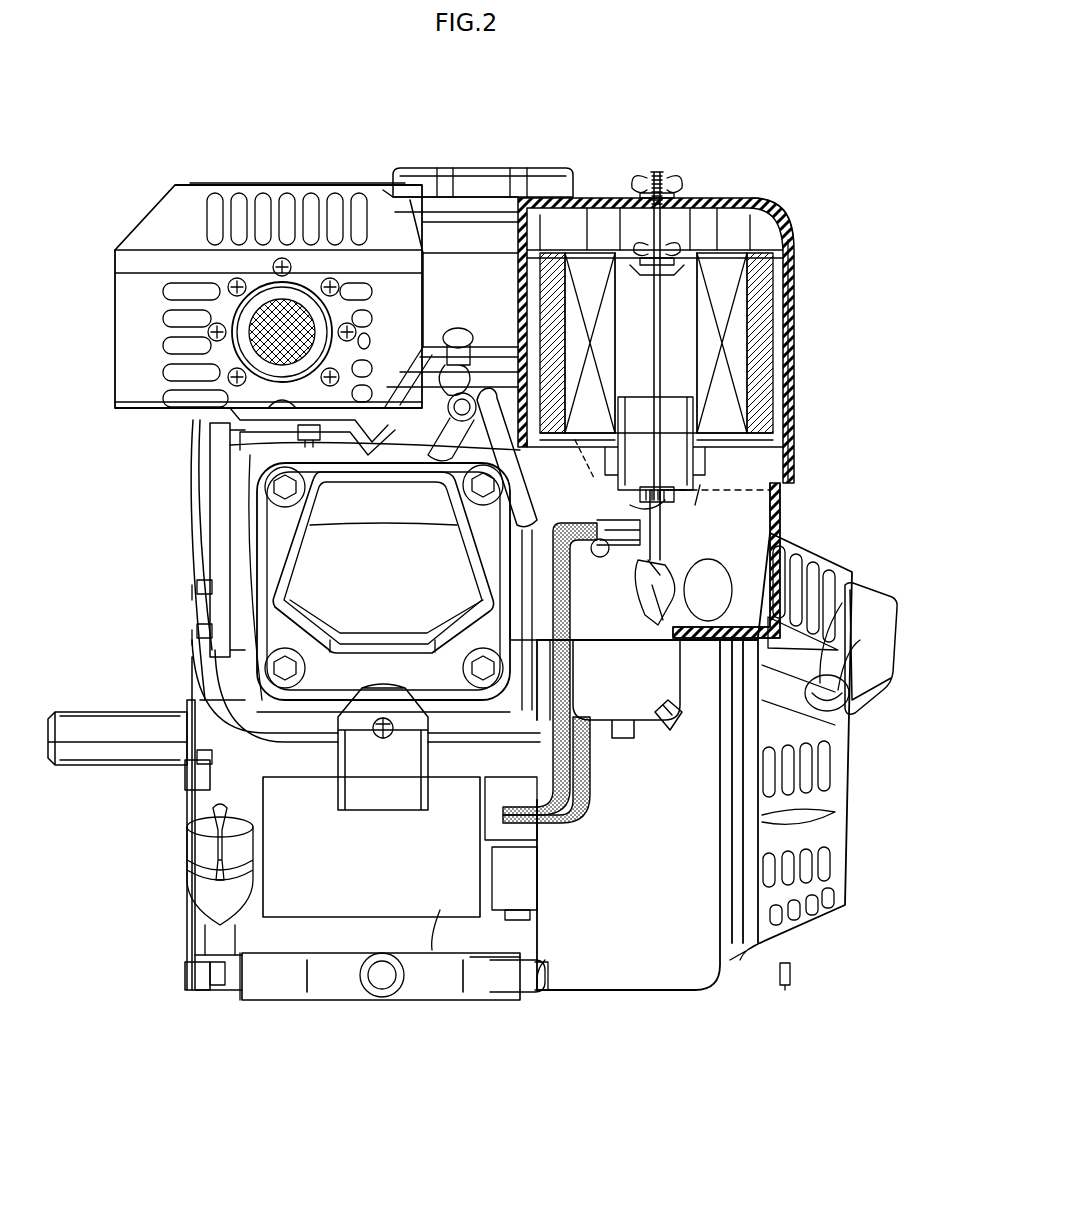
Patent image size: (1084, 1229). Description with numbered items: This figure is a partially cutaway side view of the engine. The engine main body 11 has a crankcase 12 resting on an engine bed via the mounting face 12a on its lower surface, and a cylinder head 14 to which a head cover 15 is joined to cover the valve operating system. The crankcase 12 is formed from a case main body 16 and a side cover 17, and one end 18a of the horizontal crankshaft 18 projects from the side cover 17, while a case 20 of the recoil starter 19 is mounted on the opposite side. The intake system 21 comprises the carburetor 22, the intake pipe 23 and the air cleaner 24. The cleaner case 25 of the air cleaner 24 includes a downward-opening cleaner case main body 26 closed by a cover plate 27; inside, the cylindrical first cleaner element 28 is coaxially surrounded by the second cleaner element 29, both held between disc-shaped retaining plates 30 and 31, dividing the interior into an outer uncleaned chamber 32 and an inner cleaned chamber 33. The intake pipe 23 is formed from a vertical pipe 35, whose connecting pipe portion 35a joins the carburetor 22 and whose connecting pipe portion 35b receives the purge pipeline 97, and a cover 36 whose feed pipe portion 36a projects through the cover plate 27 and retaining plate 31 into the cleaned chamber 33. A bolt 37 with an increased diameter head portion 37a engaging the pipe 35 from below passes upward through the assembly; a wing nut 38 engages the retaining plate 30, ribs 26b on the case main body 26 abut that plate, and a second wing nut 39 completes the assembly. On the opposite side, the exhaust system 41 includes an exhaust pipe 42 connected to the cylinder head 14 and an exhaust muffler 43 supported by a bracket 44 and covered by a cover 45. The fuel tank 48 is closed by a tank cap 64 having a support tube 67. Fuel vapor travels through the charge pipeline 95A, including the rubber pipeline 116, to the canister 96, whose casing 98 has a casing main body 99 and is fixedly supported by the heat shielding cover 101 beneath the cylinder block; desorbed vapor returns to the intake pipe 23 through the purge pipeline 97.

The engine main body 11 is at (185, 965).
The crankcase 12 is at (371, 1034).
The mounting face 12a is at (483, 1005).
The cylinder head 14 is at (520, 535).
The head cover 15 is at (300, 575).
The case main body 16 is at (360, 960).
The side cover 17 is at (280, 962).
The crankshaft 18 is at (117, 746).
The one end of crankshaft 18a is at (135, 712).
The recoil starter 19 is at (688, 992).
The case 20 is at (597, 990).
The intake system 21 is at (650, 745).
The carburetor 22 is at (607, 684).
The intake pipe 23 is at (713, 517).
The air cleaner 24 is at (678, 360).
The cleaner case 25 is at (684, 343).
The cleaner case main body 26 is at (785, 300).
The ribs 26b is at (600, 228).
The cover plate 27 is at (860, 283).
The first cleaner element 28 is at (540, 320).
The second cleaner element 29 is at (540, 280).
The retaining plate 30 is at (720, 250).
The retaining plate 31 is at (697, 320).
The uncleaned chamber 32 is at (790, 262).
The cleaned chamber 33 is at (770, 258).
The pipe 35 is at (750, 560).
The connecting pipe portion 35a is at (650, 610).
The connecting pipe portion 35b is at (708, 590).
The cover 36 is at (780, 468).
The feed pipe portion 36a is at (625, 425).
The bolt 37 is at (655, 170).
The increased diameter head portion 37a is at (662, 505).
The wing nut 38 is at (690, 248).
The wing nut 39 is at (645, 188).
The exhaust system 41 is at (185, 478).
The exhaust pipe 42 is at (195, 460).
The exhaust muffler 43 is at (300, 445).
The bracket 44 is at (225, 483).
The cover 45 is at (140, 235).
The fuel tank 48 is at (430, 220).
The tank cap 64 is at (482, 160).
The support tube 67 is at (470, 195).
The charge pipeline 95A is at (575, 830).
The canister 96 is at (438, 920).
The purge pipeline 97 is at (540, 735).
The casing 98 is at (367, 866).
The casing main body 99 is at (275, 835).
The heat shielding cover 101 is at (192, 715).
The pipeline 116 is at (592, 773).